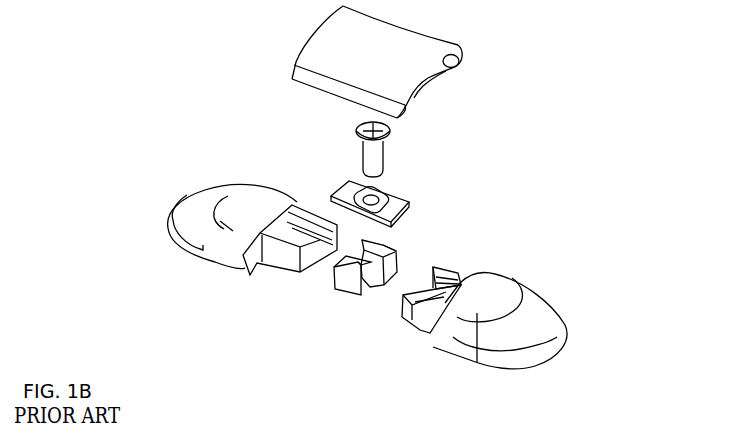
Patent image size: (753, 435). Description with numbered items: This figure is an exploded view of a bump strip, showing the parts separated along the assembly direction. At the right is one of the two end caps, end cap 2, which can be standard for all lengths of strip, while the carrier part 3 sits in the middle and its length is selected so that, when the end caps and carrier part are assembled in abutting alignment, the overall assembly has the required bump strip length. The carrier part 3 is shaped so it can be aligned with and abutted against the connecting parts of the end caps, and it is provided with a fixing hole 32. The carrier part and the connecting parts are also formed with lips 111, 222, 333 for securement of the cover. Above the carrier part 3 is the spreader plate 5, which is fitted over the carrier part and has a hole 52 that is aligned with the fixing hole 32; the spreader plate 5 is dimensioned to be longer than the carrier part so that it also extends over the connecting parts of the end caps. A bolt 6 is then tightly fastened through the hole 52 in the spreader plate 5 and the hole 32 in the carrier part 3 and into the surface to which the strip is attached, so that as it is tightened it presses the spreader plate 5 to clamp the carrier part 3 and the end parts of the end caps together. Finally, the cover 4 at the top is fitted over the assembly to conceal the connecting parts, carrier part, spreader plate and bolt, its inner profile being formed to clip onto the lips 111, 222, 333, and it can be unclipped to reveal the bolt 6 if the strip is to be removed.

The cover 4 is at (408, 102).
The bolt 6 is at (368, 160).
The spreader plate 5 is at (410, 205).
The hole 52 is at (387, 189).
The lip 111 is at (287, 260).
The carrier part 3 is at (347, 288).
The fixing hole 32 is at (357, 263).
The lip 333 is at (395, 249).
The end cap 2 is at (550, 358).
The lip 222 is at (420, 327).